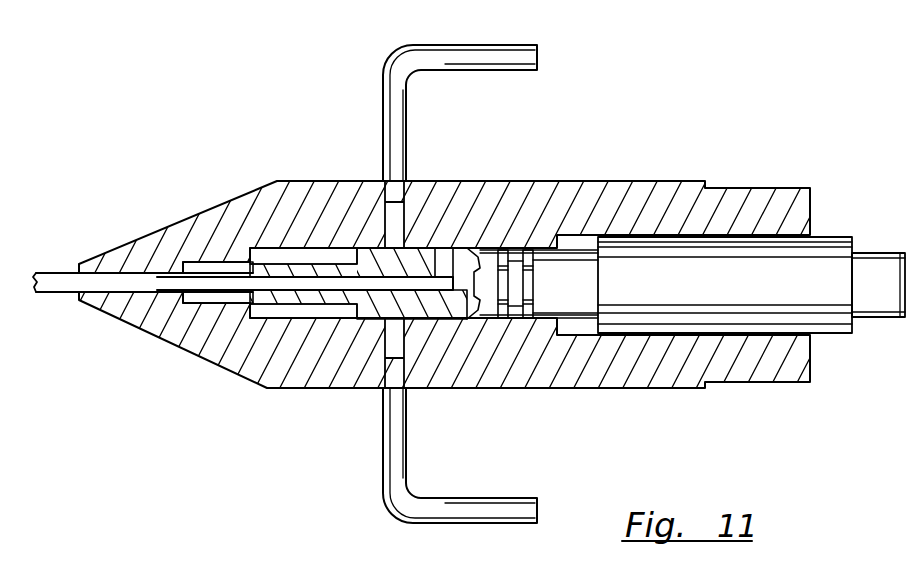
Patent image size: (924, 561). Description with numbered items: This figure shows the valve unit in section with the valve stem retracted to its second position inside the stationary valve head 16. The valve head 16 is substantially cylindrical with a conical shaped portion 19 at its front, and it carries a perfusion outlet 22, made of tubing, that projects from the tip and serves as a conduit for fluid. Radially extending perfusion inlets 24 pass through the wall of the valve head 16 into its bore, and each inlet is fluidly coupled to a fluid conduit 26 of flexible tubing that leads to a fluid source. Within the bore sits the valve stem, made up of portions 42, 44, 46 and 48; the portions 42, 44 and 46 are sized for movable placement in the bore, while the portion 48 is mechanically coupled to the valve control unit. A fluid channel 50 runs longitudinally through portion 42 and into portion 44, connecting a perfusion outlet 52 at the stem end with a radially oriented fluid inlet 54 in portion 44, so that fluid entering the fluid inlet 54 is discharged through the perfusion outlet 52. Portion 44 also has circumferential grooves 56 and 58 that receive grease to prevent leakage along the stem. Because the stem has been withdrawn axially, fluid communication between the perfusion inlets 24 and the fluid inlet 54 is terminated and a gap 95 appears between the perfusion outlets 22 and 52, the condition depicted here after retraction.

The valve head 16 is at (662, 107).
The conical shaped portion 19 is at (187, 218).
The perfusion outlet 22 is at (55, 283).
The perfusion inlets 24 is at (352, 183).
The fluid conduit 26 is at (390, 67).
The valve stem portion 42 is at (313, 307).
The valve stem portion 44 is at (367, 260).
The valve stem portion 46 is at (715, 294).
The valve stem portion 48 is at (848, 303).
The fluid channel 50 is at (235, 305).
The perfusion outlet 52 is at (120, 285).
The fluid inlet 54 is at (448, 260).
The groove 56 is at (499, 316).
The groove 58 is at (527, 316).
The gap 95 is at (97, 300).